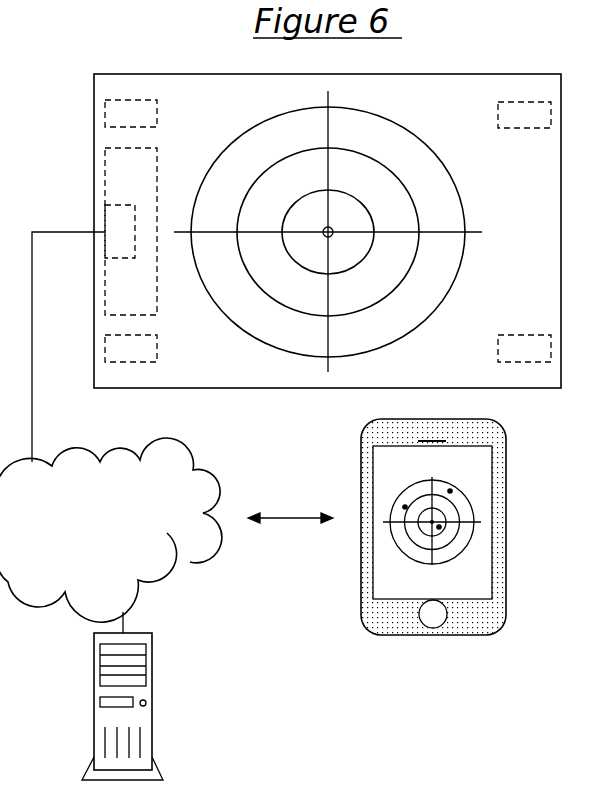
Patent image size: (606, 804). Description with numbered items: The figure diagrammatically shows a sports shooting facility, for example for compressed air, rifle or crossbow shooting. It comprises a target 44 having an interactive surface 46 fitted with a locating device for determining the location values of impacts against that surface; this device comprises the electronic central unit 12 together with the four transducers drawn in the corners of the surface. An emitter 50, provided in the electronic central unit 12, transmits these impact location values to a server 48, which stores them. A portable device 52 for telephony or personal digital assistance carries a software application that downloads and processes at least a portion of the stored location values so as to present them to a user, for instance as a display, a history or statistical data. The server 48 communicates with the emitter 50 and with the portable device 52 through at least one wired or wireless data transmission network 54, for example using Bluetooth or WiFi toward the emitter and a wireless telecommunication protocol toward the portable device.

The interactive surface 46 is at (430, 100).
The target 44 is at (232, 140).
The electronic central unit 12 is at (105, 180).
The emitter 50 is at (117, 221).
The data transmission network 54 is at (111, 535).
The server 48 is at (152, 700).
The portable device 52 is at (361, 481).